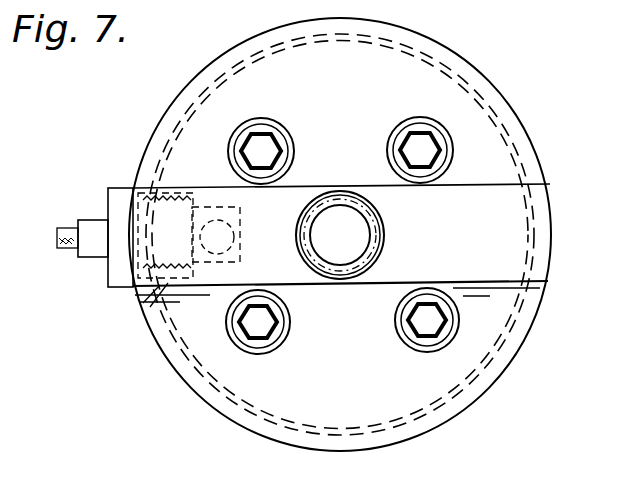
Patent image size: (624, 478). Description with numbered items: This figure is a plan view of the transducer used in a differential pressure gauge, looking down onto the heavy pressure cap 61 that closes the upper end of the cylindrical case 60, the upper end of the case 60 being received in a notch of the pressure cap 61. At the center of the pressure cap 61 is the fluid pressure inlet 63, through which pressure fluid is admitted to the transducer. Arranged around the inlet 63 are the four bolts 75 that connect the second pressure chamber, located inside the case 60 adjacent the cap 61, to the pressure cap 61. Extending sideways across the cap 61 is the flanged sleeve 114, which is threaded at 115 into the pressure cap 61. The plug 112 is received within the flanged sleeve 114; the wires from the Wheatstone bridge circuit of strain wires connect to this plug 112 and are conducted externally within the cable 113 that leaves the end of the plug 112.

The cylindrical case 60 is at (182, 378).
The pressure cap 61 is at (168, 109).
The fluid pressure inlet 63 is at (350, 169).
The bolts 75 is at (415, 143).
The plug 112 is at (96, 219).
The cable 113 is at (63, 228).
The flanged sleeve 114 is at (118, 189).
The threaded connection 115 is at (158, 290).